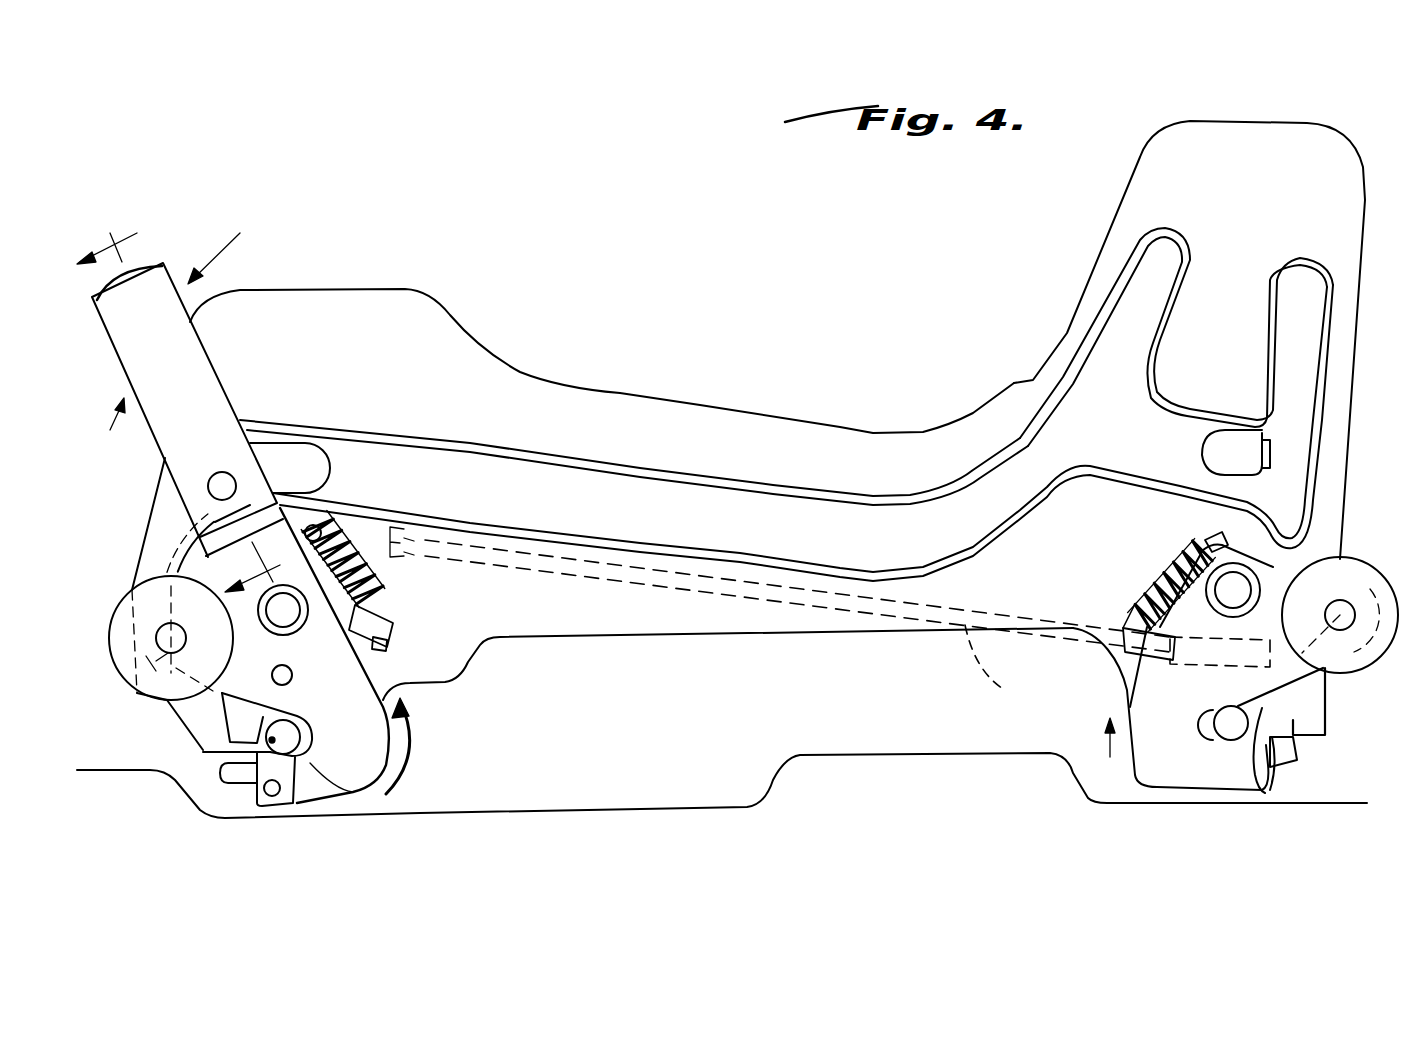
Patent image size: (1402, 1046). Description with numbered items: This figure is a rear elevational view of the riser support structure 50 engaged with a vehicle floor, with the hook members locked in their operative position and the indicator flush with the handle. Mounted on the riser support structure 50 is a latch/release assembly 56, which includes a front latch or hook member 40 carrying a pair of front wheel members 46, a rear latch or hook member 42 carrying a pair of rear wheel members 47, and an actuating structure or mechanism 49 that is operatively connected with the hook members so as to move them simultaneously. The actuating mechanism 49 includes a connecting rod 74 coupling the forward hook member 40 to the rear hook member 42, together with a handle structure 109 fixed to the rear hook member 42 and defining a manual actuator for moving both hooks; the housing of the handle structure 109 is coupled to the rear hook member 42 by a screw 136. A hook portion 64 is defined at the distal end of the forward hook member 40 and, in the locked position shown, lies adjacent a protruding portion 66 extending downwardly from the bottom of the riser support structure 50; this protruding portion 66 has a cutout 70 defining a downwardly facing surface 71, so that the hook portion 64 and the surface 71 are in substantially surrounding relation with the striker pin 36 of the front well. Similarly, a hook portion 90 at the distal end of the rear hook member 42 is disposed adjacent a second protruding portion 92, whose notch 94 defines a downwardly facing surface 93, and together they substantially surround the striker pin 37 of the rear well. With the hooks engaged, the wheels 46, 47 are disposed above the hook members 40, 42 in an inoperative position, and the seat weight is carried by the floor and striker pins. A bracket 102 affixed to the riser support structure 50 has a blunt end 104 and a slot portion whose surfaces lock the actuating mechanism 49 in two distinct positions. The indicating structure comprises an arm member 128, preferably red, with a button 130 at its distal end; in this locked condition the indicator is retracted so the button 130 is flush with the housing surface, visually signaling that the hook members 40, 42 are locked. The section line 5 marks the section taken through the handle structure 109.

The section line 5- 5 is at (178, 406).
The striker pin 36 is at (1297, 760).
The striker pin 37 is at (293, 803).
The front latch or hook member 40 is at (1160, 678).
The rear latch or hook member 42 is at (350, 713).
The front wheel members 46 is at (1352, 580).
The rear wheel members 47 is at (125, 620).
The actuating structure or mechanism 49 is at (192, 316).
The riser support structure 50 is at (1272, 142).
The latch/release assembly 56 is at (388, 668).
The hook portion 64 is at (1190, 783).
The protruding portion 66 is at (1280, 717).
The cutout 70 is at (1264, 783).
The downwardly facing surface 71 is at (1242, 708).
The connecting rod 74 is at (999, 669).
The hook portion 90 is at (353, 793).
The second protruding portion 92 is at (203, 752).
The downwardly facing surface 93 is at (293, 718).
The notch 94 is at (255, 781).
The bracket 102 is at (165, 537).
The blunt end 104 is at (135, 686).
The handle structure 109 is at (190, 330).
The arm member 128 is at (143, 285).
The button 130 is at (120, 268).
The screw 136 is at (228, 470).